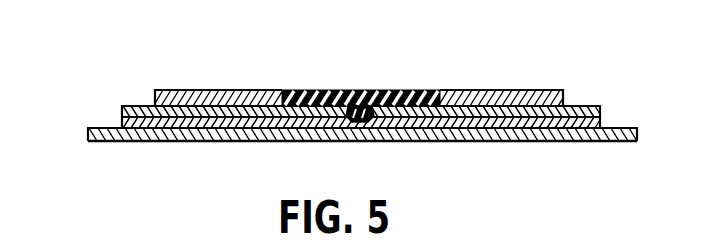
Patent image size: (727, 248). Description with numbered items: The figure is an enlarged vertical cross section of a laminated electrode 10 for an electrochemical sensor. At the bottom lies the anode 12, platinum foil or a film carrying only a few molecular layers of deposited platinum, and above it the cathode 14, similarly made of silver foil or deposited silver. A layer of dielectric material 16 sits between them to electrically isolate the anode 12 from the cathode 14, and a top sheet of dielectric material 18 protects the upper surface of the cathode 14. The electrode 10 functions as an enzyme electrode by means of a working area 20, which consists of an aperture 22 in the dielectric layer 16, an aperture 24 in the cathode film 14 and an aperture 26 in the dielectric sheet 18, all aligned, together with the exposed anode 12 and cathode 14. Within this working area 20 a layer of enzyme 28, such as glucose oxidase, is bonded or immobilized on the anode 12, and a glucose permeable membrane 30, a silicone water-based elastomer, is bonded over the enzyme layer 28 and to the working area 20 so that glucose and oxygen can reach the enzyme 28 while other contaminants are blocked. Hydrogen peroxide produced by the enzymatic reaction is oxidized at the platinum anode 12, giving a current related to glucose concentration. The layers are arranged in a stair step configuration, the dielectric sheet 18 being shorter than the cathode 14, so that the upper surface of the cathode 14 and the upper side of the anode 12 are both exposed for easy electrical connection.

The laminated electrode 10 is at (549, 78).
The anode 12 is at (637, 139).
The cathode 14 is at (600, 108).
The layer of dielectric material 16 is at (122, 117).
The top sheet of dielectric material 18 is at (156, 91).
The working area 20 is at (369, 92).
The aperture in dielectric layer 22 is at (318, 142).
The aperture in cathode film 24 is at (412, 92).
The aperture in dielectric sheet 26 is at (438, 92).
The layer of enzyme 28 is at (351, 94).
The glucose permeable membrane 30 is at (313, 92).